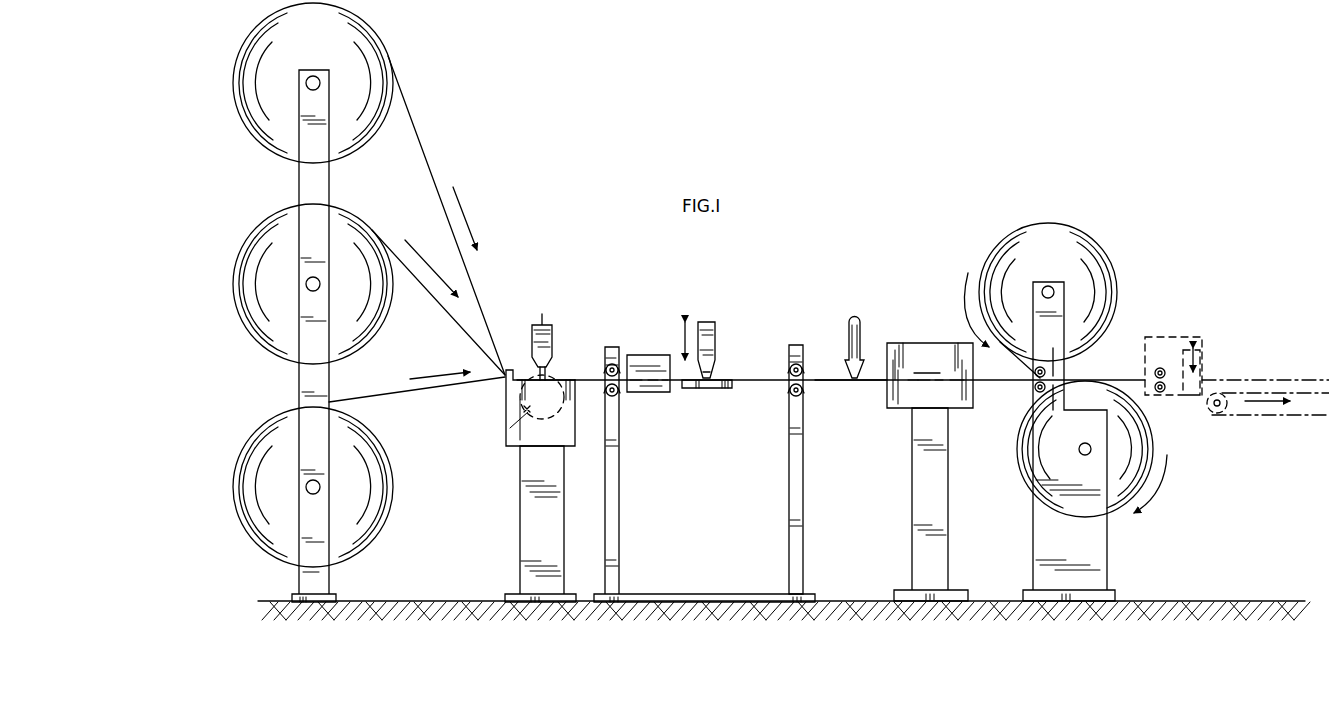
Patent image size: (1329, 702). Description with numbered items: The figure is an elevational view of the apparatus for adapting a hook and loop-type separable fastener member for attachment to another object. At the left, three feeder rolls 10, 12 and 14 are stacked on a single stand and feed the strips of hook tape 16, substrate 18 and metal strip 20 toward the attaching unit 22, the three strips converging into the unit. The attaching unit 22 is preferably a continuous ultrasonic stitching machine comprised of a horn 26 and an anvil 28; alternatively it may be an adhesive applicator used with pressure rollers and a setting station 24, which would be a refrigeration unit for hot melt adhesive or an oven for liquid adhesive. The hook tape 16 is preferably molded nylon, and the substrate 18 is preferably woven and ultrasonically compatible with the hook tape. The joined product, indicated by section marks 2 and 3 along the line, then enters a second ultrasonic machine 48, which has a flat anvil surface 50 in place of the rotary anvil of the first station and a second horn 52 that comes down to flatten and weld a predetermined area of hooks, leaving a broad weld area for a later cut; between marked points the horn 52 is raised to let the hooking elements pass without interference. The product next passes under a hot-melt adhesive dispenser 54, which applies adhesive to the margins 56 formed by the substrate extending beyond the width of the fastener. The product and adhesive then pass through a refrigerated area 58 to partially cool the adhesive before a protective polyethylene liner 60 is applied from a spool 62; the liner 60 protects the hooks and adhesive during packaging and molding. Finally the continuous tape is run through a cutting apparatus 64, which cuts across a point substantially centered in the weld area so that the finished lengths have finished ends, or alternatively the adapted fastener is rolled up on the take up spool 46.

The feeder roll 10 is at (372, 141).
The feeder roll 12 is at (379, 331).
The feeder roll 14 is at (373, 542).
The hook tape 16 is at (424, 151).
The substrate 18 is at (463, 384).
The metal strip 20 is at (463, 330).
The attaching unit 22 is at (556, 343).
The setting station 24 is at (648, 353).
The horn 26 is at (534, 362).
The anvil 28 is at (510, 426).
The stranded wire 2 is at (548, 370).
The finished cable 3 is at (1053, 362).
The take up spool 46 is at (1015, 462).
The second ultrasonic machine 48 is at (719, 360).
The flat anvil surface 50 is at (696, 388).
The second horn 52 is at (715, 370).
The hot-melt adhesive dispenser 54 is at (868, 355).
The margins 56 is at (843, 378).
The refrigerated area 58 is at (930, 472).
The protective polyethylene liner 60 is at (1022, 362).
The spool 62 is at (1113, 259).
The cutting apparatus 64 is at (1190, 337).